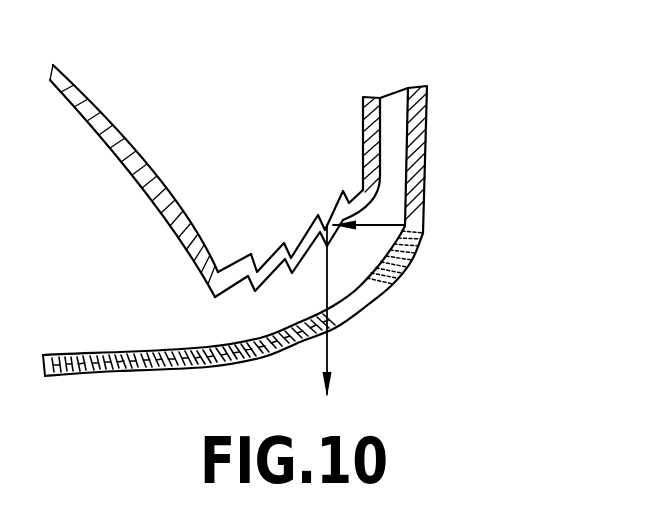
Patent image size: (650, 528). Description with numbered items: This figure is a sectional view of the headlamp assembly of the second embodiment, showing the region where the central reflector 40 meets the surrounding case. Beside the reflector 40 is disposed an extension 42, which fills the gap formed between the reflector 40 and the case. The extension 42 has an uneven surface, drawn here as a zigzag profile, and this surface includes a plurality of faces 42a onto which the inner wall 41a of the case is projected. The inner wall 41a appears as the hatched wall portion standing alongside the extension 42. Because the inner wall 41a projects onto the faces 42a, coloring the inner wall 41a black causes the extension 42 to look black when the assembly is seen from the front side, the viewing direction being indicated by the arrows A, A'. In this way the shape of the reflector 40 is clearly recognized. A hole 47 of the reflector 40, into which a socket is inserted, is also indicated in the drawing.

The reflector 40 is at (137, 149).
The inner wall of the case 41a is at (407, 141).
The hole of the reflector 47 is at (427, 168).
The extension 42 is at (254, 278).
The faces 42a is at (328, 234).
The arrow A is at (403, 202).
The arrow A' is at (304, 313).